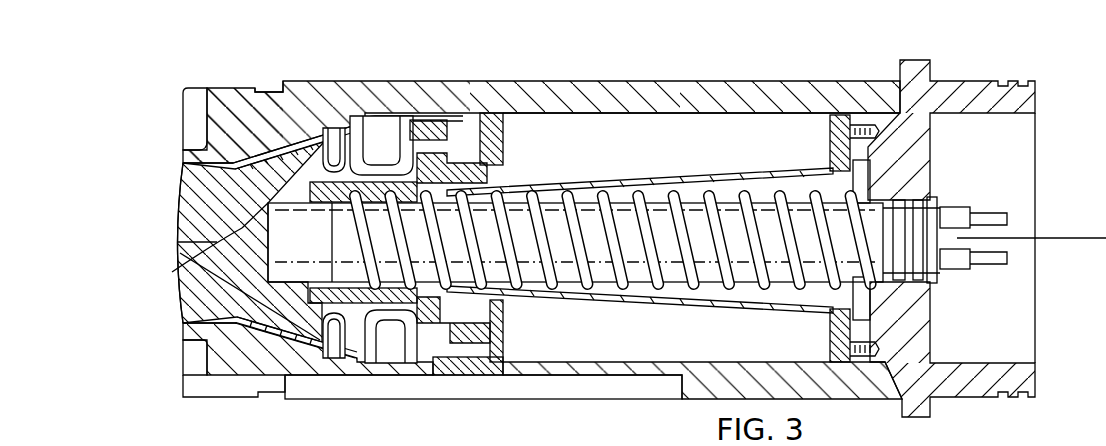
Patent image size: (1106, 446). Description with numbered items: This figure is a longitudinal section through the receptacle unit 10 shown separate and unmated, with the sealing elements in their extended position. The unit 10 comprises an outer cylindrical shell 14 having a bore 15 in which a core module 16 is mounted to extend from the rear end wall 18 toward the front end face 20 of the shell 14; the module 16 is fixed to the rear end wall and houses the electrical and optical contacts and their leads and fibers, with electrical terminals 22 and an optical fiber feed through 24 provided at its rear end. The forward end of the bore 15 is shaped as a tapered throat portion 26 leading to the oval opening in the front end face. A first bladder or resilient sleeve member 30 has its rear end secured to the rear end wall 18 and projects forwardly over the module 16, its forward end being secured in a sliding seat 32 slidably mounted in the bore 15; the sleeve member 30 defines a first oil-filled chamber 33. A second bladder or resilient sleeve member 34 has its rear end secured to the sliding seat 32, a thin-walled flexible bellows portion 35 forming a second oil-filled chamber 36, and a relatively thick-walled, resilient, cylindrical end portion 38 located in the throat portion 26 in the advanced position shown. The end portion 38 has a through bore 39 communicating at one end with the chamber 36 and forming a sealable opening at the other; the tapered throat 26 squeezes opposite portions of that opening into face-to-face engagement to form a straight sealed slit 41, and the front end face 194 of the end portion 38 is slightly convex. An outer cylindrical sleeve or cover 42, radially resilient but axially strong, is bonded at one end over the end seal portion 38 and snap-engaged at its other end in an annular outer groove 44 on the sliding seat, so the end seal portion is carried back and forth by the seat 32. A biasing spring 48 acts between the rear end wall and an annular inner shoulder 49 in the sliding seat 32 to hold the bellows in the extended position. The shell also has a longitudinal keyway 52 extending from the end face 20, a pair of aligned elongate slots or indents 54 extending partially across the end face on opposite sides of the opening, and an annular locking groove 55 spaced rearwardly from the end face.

The receptacle unit 10 is at (667, 74).
The outer cylindrical shell 14 is at (716, 85).
The bore 15 is at (673, 116).
The core module 16 is at (633, 253).
The rear end wall 18 is at (920, 317).
The front end face 20 is at (187, 163).
The electrical terminals 22 is at (1007, 217).
The optical fiber feed through 24 is at (950, 237).
The tapered throat portion 26 is at (243, 90).
The first bladder or resilient sleeve member 30 is at (707, 172).
The sliding seat 32 is at (495, 130).
The first oil-filled chamber 33 is at (780, 298).
The second bladder or resilient sleeve member 34 is at (344, 140).
The flexible bellows portion 35 is at (343, 340).
The second oil-filled chamber 36 is at (378, 150).
The cylindrical end portion 38 is at (200, 183).
The through bore 39 is at (176, 266).
The sealed slit 41 is at (175, 242).
The outer cylindrical sleeve or cover 42 is at (400, 363).
The annular outer groove 44 is at (462, 360).
The biasing spring 48 is at (582, 193).
The annular inner shoulder 49 is at (372, 322).
The longitudinal keyway 52 is at (588, 388).
The elongate slots or indents 54 is at (193, 127).
The annular locking groove 55 is at (270, 89).
The front end face of the forward end seal portion 194 is at (177, 212).